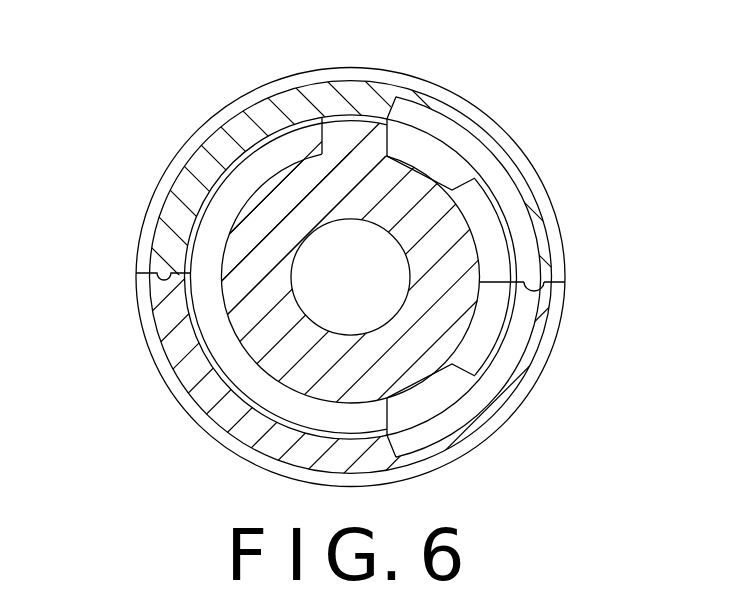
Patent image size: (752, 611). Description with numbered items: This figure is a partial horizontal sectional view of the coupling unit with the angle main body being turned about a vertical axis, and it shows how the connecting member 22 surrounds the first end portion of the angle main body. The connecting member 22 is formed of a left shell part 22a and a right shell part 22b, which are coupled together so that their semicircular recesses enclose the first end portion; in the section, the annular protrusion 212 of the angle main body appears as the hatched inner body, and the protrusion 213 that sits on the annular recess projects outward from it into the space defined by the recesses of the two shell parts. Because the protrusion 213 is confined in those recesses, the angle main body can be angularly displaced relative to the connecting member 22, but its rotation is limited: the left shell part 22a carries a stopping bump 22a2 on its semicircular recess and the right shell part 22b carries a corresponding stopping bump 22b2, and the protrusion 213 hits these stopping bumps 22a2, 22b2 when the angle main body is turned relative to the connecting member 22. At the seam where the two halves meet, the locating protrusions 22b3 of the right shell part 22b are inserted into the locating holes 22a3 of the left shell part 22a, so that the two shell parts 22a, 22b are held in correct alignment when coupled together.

The connecting member 22 is at (138, 166).
The left shell part 22a is at (223, 415).
The right shell part 22b is at (318, 100).
The annular protrusion 212 is at (267, 210).
The protrusion 213 is at (374, 122).
The stopping bump 22a2 is at (437, 397).
The stopping bump 22b2 is at (447, 162).
The locating holes 22a3 is at (538, 288).
The locating protrusions 22b3 is at (523, 287).